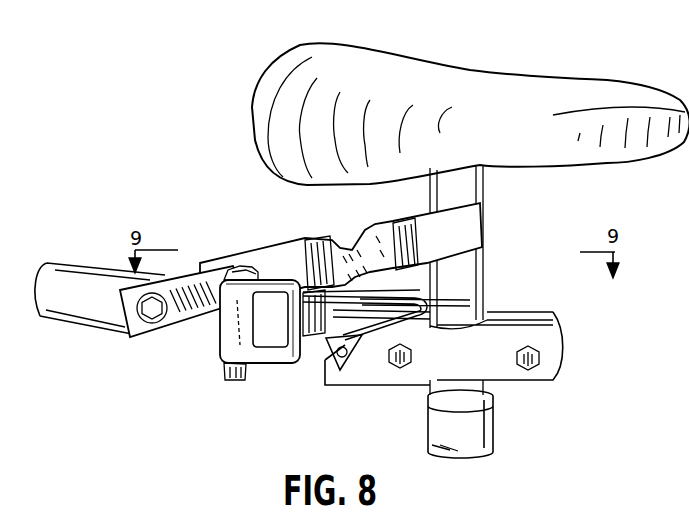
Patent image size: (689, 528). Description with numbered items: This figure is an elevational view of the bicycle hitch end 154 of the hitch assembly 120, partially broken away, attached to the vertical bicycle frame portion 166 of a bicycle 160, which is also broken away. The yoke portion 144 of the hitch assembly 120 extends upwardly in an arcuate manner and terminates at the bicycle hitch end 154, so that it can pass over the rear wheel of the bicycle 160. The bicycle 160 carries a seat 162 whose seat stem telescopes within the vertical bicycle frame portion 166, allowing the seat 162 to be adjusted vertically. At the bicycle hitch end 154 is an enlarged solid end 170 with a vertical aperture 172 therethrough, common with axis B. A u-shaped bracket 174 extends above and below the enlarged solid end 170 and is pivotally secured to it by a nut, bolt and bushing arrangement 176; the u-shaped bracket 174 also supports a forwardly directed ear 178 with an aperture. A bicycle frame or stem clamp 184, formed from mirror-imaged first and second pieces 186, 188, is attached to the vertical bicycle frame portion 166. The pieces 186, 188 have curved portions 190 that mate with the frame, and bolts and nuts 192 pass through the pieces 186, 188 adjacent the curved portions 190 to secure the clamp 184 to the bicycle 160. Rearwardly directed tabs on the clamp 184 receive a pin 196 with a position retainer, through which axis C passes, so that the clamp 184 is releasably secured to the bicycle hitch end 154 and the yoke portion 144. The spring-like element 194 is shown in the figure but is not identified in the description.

The hitch assembly 120 is at (62, 248).
The yoke portion 144 is at (72, 300).
The bicycle hitch end 154 is at (160, 276).
The bicycle 160 is at (563, 80).
The seat 162 is at (424, 75).
The vertical bicycle frame portion 166 is at (495, 428).
The enlarged solid end 170 is at (222, 338).
The vertical aperture 172 is at (236, 348).
The u-shaped bracket 174 is at (272, 370).
The nut, bolt and bushing arrangement 176 is at (243, 383).
The forwardly directed ear 178 is at (315, 358).
The bicycle frame or stem clamp 184 is at (378, 390).
The first clamp piece 186 is at (550, 312).
The second clamp piece 188 is at (555, 381).
The curved portions 190 is at (470, 412).
The bolts and nuts 192 is at (400, 380).
The spring wire 194 is at (352, 372).
The pin 196 is at (430, 300).